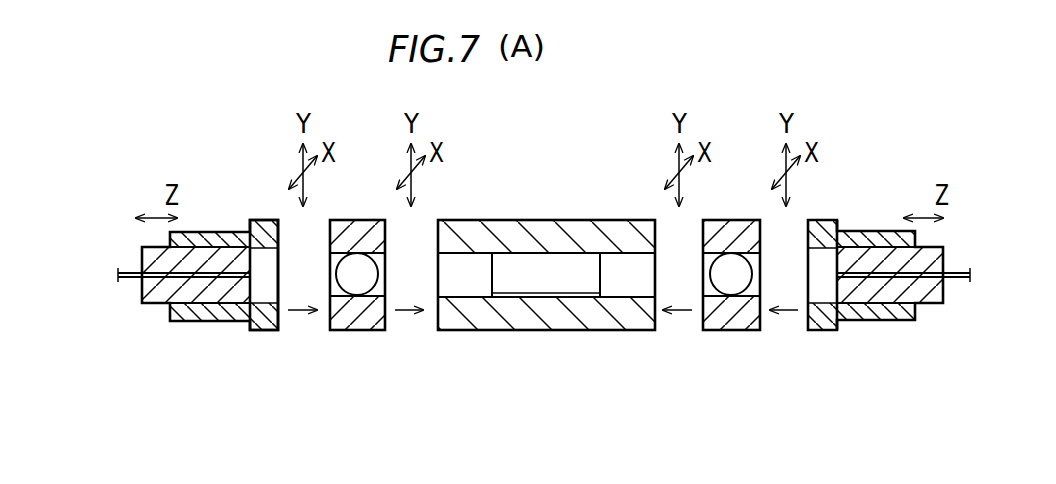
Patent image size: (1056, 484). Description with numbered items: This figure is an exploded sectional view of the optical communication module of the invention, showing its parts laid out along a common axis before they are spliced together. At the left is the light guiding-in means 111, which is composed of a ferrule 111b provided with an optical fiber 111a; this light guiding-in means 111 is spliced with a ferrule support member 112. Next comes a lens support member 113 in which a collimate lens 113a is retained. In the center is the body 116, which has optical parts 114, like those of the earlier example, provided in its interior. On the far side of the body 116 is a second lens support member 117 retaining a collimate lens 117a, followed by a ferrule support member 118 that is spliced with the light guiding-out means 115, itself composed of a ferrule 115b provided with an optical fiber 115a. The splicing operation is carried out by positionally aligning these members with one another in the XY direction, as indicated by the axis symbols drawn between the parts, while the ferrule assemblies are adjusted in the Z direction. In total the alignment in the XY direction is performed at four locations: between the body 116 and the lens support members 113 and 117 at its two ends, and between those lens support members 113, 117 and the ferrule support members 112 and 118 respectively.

The light guiding-in means 111 is at (162, 323).
The optical fiber 111a is at (118, 279).
The ferrule 111b is at (201, 304).
The ferrule support member 112 is at (256, 331).
The lens support member 113 is at (356, 279).
The collimate lens 113a is at (372, 274).
The optical parts 114 is at (546, 272).
The body 116 is at (481, 226).
The lens support member 117 is at (723, 279).
The collimate lens 117a is at (718, 274).
The ferrule support member 118 is at (818, 327).
The light guiding-out means 115 is at (935, 318).
The optical fiber 115a is at (953, 278).
The ferrule 115b is at (887, 304).